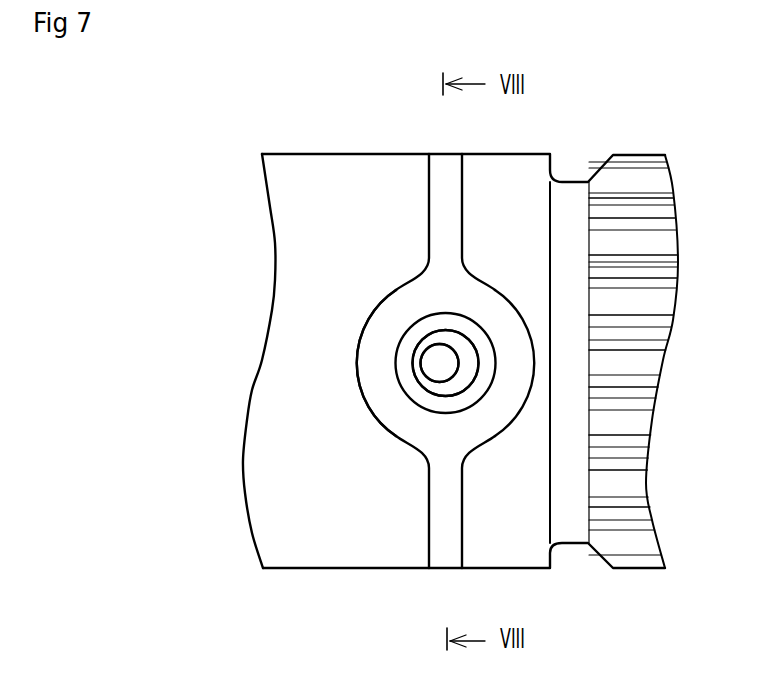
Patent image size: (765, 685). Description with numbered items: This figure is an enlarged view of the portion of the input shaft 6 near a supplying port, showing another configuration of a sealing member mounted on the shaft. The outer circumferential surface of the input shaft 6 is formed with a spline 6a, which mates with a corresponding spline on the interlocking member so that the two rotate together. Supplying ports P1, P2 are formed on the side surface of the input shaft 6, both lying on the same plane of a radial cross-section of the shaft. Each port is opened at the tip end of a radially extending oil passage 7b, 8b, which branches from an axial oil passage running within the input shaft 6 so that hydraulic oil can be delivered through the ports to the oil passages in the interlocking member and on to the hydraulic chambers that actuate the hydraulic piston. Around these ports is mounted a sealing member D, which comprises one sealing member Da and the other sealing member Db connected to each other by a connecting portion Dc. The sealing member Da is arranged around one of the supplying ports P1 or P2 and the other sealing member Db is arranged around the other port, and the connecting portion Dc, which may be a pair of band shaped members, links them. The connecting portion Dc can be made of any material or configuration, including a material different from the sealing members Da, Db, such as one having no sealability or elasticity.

The input shaft 6 is at (287, 206).
The spline 6a is at (638, 162).
The sealing member D is at (175, 238).
The connecting portion Dc is at (433, 244).
The one sealing member Da is at (385, 310).
The other sealing member Db is at (288, 349).
The supplying port P1 is at (433, 341).
The supplying port P2 is at (329, 353).
The oil passage 7b is at (448, 381).
The oil passage 8b is at (311, 373).